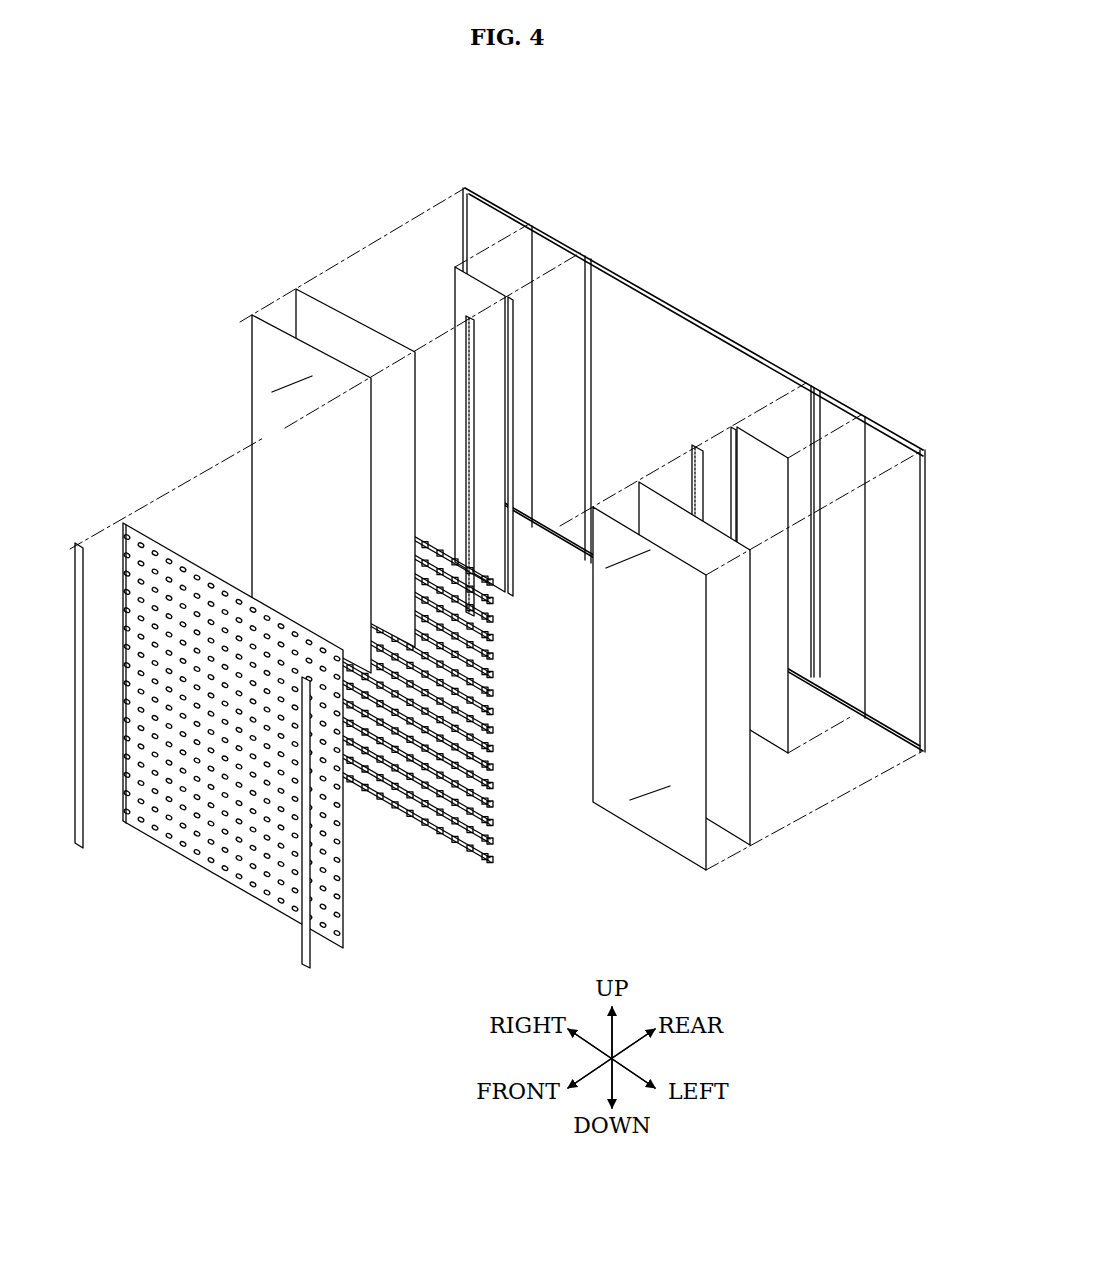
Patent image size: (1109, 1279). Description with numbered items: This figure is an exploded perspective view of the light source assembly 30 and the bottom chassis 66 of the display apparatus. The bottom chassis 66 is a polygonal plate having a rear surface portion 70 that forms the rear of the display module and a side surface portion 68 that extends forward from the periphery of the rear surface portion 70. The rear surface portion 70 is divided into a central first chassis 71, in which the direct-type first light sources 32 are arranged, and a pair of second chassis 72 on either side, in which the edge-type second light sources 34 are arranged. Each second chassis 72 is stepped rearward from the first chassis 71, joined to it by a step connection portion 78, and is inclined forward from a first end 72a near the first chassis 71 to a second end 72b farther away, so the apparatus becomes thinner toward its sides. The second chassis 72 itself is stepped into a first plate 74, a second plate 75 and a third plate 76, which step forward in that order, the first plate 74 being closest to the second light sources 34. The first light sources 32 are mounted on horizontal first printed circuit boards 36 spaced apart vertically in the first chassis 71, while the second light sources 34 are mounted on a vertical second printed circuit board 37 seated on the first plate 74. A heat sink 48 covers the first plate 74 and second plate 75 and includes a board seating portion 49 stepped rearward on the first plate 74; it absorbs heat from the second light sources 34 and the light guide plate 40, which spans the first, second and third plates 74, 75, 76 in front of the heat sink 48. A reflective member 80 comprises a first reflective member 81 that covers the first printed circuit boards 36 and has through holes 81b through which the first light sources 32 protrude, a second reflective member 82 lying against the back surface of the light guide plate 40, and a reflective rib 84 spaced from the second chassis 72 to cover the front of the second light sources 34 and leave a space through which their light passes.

The light source assembly 30 is at (488, 565).
The first light sources 32 is at (408, 659).
The second light sources 34 is at (544, 503).
The first printed circuit boards 36 is at (485, 790).
The second printed circuit board 37 is at (466, 345).
The light guide plate 40 is at (258, 338).
The heat sink 48 is at (467, 290).
The board seating portion 49 is at (512, 302).
The bottom chassis 66 is at (731, 496).
The side surface portion 68 is at (925, 468).
The rear surface portion 70 is at (705, 318).
The first chassis 71 is at (640, 305).
The second chassis 72 is at (522, 255).
The first end 72a is at (798, 405).
The second end 72b is at (926, 520).
The first plate 74 is at (815, 660).
The second plate 75 is at (850, 690).
The third plate 76 is at (897, 697).
The step connection portion 78 is at (800, 557).
The reflective member 80 is at (542, 574).
The first reflective member 81 is at (294, 750).
The through holes 81b is at (212, 862).
The second reflective member 82 is at (326, 318).
The reflective rib 84 is at (79, 848).